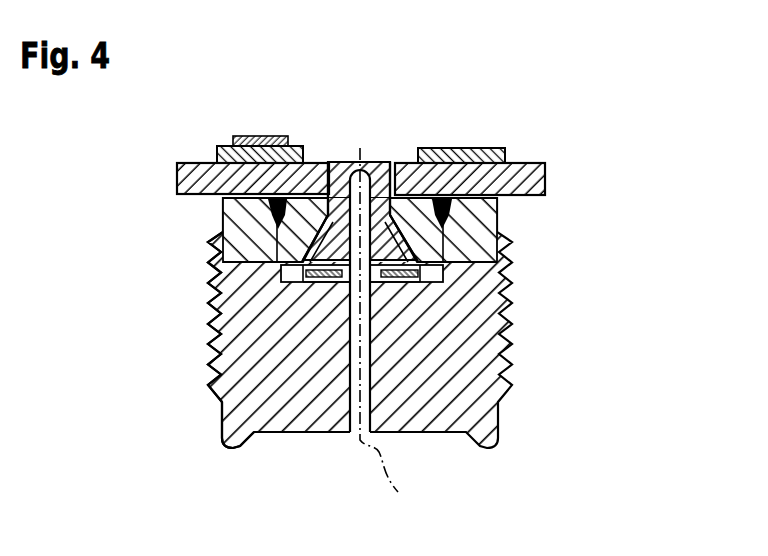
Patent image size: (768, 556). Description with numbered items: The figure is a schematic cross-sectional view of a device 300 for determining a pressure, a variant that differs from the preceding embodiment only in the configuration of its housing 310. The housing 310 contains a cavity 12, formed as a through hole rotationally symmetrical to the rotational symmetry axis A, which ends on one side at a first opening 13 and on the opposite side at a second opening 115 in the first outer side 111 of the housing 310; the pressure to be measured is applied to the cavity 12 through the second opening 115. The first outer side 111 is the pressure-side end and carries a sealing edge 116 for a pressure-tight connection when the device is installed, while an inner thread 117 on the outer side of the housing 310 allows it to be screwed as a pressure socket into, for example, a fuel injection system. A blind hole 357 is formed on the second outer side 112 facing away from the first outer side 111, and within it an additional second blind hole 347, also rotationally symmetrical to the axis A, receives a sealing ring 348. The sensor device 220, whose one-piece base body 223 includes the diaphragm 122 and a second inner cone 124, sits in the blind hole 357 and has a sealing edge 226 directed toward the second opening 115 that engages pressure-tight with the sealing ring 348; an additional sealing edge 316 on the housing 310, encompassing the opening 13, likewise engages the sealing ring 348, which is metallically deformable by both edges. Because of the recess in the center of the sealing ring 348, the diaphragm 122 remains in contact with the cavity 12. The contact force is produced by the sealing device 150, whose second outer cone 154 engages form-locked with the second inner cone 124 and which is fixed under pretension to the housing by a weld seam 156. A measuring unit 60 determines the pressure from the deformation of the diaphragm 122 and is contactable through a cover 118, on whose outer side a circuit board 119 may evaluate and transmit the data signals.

The device 300 is at (620, 135).
The first opening 13 is at (329, 150).
The sensor device 220 is at (340, 162).
The diaphragm 122 is at (355, 162).
The measuring unit 60 is at (378, 160).
The second outer side 112 is at (475, 157).
The circuit board 119 is at (217, 154).
The cover 118 is at (198, 177).
The weld seam 156 is at (272, 212).
The sealing device 150 is at (258, 246).
The additional sealing edge 316 is at (310, 271).
The sealing ring 348 is at (320, 284).
The sealing edge 226 is at (338, 274).
The inner thread 117 is at (215, 393).
The sealing edge 116 is at (223, 434).
The base body 223 is at (445, 222).
The second outer cone 154 is at (455, 252).
The blind hole 357 is at (445, 268).
The second blind hole 347 is at (425, 284).
The second inner cone 124 is at (374, 282).
The housing 310 is at (455, 382).
The second opening 115 is at (343, 440).
The cavity 12 is at (351, 438).
The rotational symmetry axis A is at (386, 333).
The first outer side 111 is at (437, 433).